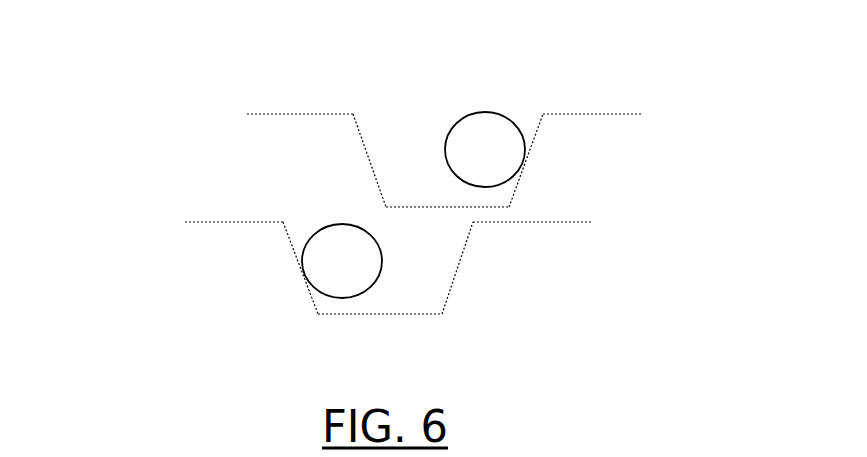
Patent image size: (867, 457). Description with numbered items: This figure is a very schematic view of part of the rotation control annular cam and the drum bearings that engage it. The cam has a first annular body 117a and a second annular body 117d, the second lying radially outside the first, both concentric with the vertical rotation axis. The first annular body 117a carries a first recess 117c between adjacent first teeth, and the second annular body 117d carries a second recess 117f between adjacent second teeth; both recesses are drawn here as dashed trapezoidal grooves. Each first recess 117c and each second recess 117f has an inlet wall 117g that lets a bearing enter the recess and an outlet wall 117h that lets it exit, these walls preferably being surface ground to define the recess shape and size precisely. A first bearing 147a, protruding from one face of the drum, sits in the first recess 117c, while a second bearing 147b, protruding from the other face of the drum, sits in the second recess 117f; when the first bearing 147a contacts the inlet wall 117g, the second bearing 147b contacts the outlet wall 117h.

The first annular body 117a is at (545, 266).
The first recess 117c is at (398, 303).
The second annular body 117d is at (613, 164).
The second recess 117f is at (406, 110).
The inlet wall 117g is at (368, 155).
The outlet wall 117h is at (518, 175).
The first bearing 147a is at (333, 260).
The second bearing 147b is at (492, 137).